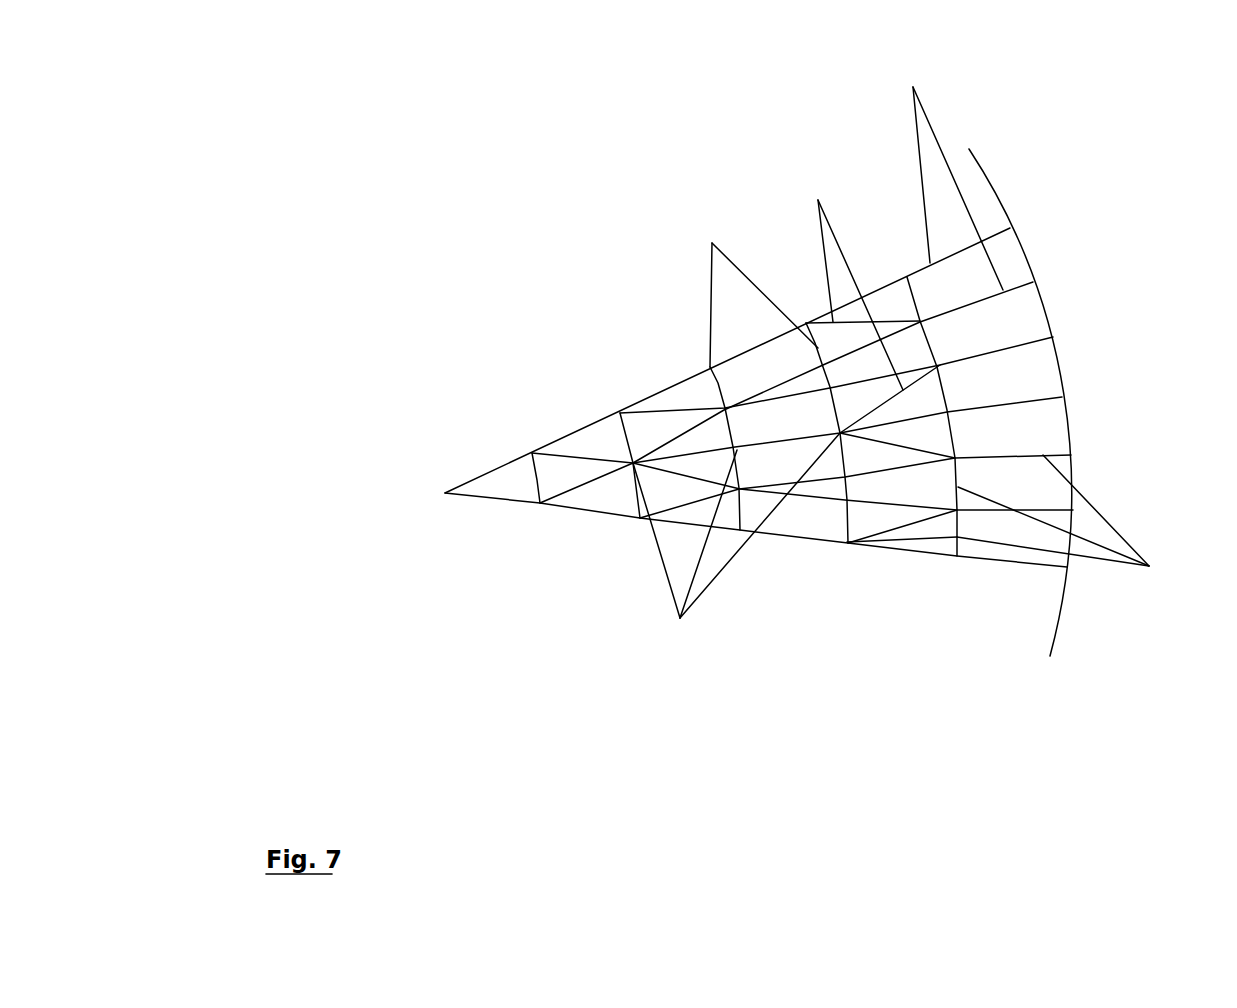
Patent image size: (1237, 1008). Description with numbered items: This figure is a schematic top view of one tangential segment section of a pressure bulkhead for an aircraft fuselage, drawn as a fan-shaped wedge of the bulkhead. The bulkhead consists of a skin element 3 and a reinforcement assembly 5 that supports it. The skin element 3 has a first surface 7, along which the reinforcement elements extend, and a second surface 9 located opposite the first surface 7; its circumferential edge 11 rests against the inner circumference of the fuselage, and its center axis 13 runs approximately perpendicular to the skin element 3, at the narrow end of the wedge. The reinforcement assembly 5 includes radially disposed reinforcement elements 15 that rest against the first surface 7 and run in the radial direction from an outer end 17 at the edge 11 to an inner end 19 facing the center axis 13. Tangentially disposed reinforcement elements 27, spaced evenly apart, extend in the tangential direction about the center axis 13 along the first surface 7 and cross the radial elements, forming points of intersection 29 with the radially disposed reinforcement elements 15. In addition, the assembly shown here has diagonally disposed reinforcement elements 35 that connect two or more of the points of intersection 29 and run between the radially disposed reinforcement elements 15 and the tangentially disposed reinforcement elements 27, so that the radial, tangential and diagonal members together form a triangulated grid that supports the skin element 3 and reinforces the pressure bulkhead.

The skin element 3 is at (998, 328).
The reinforcement assembly 5 is at (1067, 518).
The first surface 7 is at (999, 386).
The second surface 9 is at (1068, 373).
The circumferential edge 11 is at (1027, 250).
The center axis 13 is at (443, 487).
The radially disposed reinforcement elements 15 is at (943, 166).
The outer end 17 is at (1057, 573).
The inner end 19 is at (475, 490).
The tangentially disposed reinforcement elements 27 is at (749, 285).
The points of intersection 29 is at (736, 549).
The diagonally disposed reinforcement elements 35 is at (850, 270).